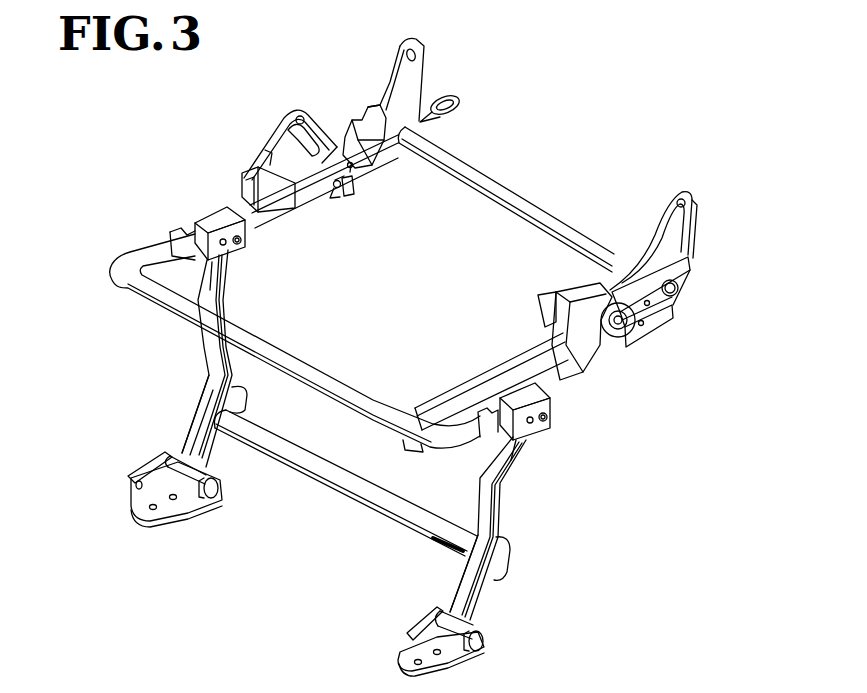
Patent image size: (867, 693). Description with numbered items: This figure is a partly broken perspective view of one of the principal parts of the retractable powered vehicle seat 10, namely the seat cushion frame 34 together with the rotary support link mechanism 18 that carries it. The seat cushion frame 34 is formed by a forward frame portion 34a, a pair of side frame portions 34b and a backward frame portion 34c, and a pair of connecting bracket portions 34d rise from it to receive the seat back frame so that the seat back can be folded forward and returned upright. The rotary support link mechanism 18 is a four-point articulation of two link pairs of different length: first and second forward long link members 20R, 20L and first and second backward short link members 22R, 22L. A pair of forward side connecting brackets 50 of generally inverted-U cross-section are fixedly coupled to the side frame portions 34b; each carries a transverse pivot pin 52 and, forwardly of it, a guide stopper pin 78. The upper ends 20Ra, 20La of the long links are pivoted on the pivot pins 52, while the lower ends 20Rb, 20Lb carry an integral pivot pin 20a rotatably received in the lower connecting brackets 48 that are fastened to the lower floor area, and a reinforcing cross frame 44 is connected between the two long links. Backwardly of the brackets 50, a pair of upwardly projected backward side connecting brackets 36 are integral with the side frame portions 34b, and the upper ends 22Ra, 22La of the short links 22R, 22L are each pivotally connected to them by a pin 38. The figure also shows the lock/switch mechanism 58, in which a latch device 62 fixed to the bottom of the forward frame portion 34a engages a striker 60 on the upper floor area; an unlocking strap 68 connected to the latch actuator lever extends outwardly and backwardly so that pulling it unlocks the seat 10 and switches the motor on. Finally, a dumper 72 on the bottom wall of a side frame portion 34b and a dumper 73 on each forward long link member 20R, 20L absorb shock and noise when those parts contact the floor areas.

The powered seat 10 is at (610, 104).
The rotary support link mechanism 18 is at (386, 569).
The second forward long link member 20L is at (207, 408).
The upper end of second forward long link member 20La is at (227, 278).
The lower end of second forward long link member 20Lb is at (217, 448).
The first forward long link member 20R is at (497, 520).
The upper end of first forward long link member 20Ra is at (512, 455).
The lower end of first forward long link member 20Rb is at (480, 596).
The pivot pin 20a is at (167, 458).
The second backward short link member 22L is at (250, 163).
The upper end of second backward short link member 22La is at (287, 120).
The first backward short link member 22R is at (580, 368).
The upper end of first backward short link member 22Ra is at (610, 278).
The seat cushion frame 34 is at (333, 411).
The forward frame portion 34a is at (290, 358).
The side frame portion 34b is at (303, 197).
The backward frame portion 34c is at (535, 200).
The connecting bracket portion 34d is at (420, 61).
The backward side connecting bracket 36 is at (317, 125).
The pin 38 is at (303, 108).
The reinforcing cross frame 44 is at (347, 495).
The lower connecting bracket 48 is at (197, 511).
The forward side connecting bracket 50 is at (213, 218).
The pivot pin 52 is at (243, 245).
The lock/switch mechanism 58 is at (366, 195).
The striker 60 is at (347, 193).
The latch device 62 is at (355, 182).
The unlocking strap 68 is at (457, 98).
The dumper 72 is at (675, 326).
The dumper 73 is at (247, 400).
The guide stopper pin 78 is at (228, 248).